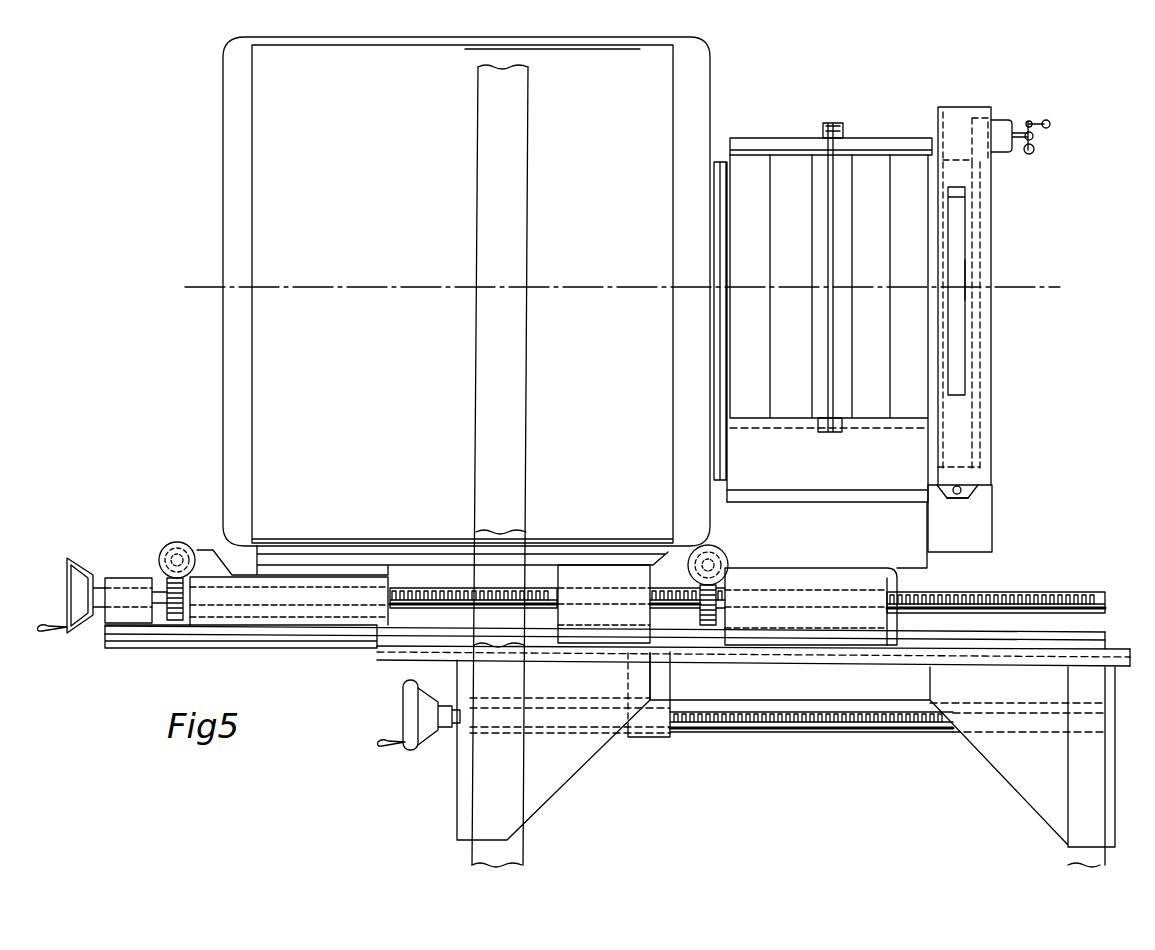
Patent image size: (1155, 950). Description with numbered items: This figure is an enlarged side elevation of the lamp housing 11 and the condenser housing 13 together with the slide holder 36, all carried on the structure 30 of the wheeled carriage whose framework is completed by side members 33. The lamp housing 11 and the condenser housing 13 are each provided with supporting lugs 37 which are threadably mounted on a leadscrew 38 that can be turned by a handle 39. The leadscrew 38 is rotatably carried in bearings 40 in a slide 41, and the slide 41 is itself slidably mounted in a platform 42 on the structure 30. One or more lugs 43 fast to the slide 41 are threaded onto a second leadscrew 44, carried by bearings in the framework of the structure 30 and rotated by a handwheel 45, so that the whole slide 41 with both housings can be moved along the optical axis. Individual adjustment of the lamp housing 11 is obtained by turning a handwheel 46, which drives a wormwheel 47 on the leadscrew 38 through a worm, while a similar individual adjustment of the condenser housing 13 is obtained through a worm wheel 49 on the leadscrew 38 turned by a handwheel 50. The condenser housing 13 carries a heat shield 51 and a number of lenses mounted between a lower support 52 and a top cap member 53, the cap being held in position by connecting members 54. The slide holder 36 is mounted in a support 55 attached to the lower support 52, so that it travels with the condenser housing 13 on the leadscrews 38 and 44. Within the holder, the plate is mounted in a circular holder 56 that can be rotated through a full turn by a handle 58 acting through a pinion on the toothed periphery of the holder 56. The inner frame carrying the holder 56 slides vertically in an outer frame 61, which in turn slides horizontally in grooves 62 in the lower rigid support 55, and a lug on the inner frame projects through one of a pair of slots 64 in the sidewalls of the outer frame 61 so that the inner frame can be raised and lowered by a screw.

The lamp housing 11 is at (240, 177).
The condenser housing 13 is at (793, 160).
The structure 30 is at (1075, 810).
The side members 33 is at (478, 192).
The slide holder 36 is at (993, 248).
The supporting lugs 37 is at (315, 620).
The leadscrew 38 is at (548, 588).
The handle 39 is at (70, 556).
The bearings 40 is at (123, 578).
The slide 41 is at (140, 645).
The platform 42 is at (378, 657).
The lugs 43 is at (670, 735).
The second leadscrew 44 is at (820, 735).
The handwheel 45 is at (415, 748).
The handwheel 46 is at (176, 545).
The wormwheel 47 is at (176, 622).
The worm wheel 49 is at (708, 625).
The handwheel 50 is at (725, 555).
The heat shield 51 is at (722, 160).
The lower support 52 is at (912, 466).
The top cap member 53 is at (890, 140).
The connecting members 54 is at (828, 240).
The support 55 is at (990, 543).
The circular holder 56 is at (962, 218).
The handle 58 is at (1030, 120).
The outer frame 61 is at (990, 478).
The grooves 62 is at (968, 501).
The slots 64 is at (960, 284).